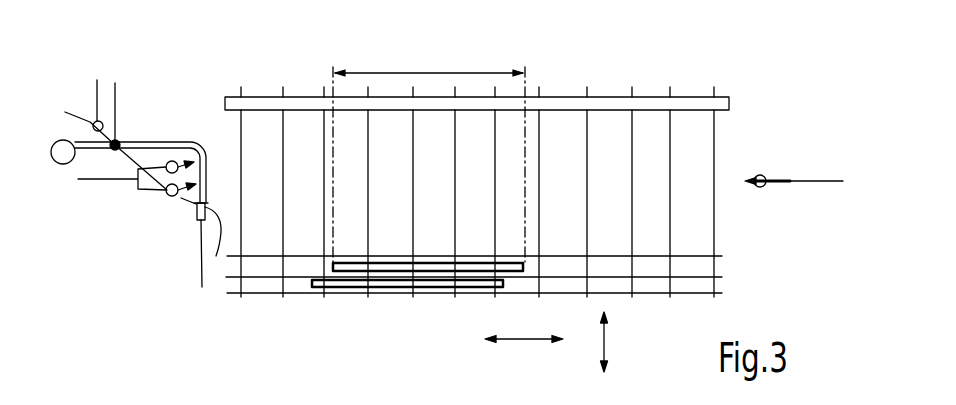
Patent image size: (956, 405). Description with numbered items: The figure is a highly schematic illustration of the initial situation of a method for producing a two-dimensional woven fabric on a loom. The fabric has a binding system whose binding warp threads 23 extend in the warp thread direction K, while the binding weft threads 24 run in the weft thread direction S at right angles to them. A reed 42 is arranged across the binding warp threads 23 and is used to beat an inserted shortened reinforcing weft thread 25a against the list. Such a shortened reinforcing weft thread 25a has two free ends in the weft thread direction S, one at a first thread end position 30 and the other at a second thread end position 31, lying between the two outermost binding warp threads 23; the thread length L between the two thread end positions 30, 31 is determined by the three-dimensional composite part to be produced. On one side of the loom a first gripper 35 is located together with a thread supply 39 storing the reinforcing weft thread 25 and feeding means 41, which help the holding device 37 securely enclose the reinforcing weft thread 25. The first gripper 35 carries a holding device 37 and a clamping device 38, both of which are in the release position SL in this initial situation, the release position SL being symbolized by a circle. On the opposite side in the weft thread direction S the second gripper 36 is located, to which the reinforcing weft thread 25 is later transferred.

The binding warp threads 23 is at (670, 183).
The binding weft threads 24 is at (718, 276).
The reinforcing weft thread 25 is at (145, 142).
The shortened reinforcing weft thread 25a is at (342, 283).
The first thread end position 30 is at (523, 262).
The second thread end position 31 is at (333, 266).
The first gripper 35 is at (125, 198).
The second gripper 36 is at (832, 188).
The holding device 37 is at (177, 158).
The clamping device 38 is at (170, 199).
The thread supply 39 is at (57, 165).
The feeding means 41 is at (88, 97).
The reed 42 is at (652, 103).
The release position SL is at (205, 182).
The thread length L is at (418, 73).
The weft thread direction S is at (518, 340).
The warp thread direction K is at (605, 343).